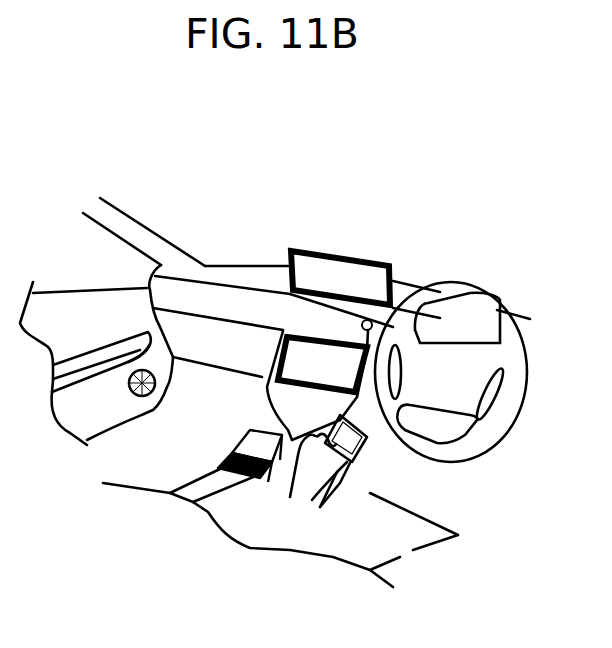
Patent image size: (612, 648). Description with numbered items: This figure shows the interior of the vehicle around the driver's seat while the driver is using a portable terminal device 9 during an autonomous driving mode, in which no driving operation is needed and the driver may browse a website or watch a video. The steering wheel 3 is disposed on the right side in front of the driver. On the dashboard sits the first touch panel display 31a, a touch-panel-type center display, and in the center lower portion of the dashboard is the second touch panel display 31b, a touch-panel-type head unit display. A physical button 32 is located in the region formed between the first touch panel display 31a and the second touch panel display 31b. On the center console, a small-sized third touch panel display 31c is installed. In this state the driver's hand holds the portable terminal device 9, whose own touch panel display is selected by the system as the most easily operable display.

The steering wheel 3 is at (470, 285).
The portable terminal device 9 is at (343, 452).
The first touch panel display 31a is at (343, 254).
The second touch panel display 31b is at (300, 323).
The third touch panel display 31c is at (233, 443).
The physical button 32 is at (372, 315).